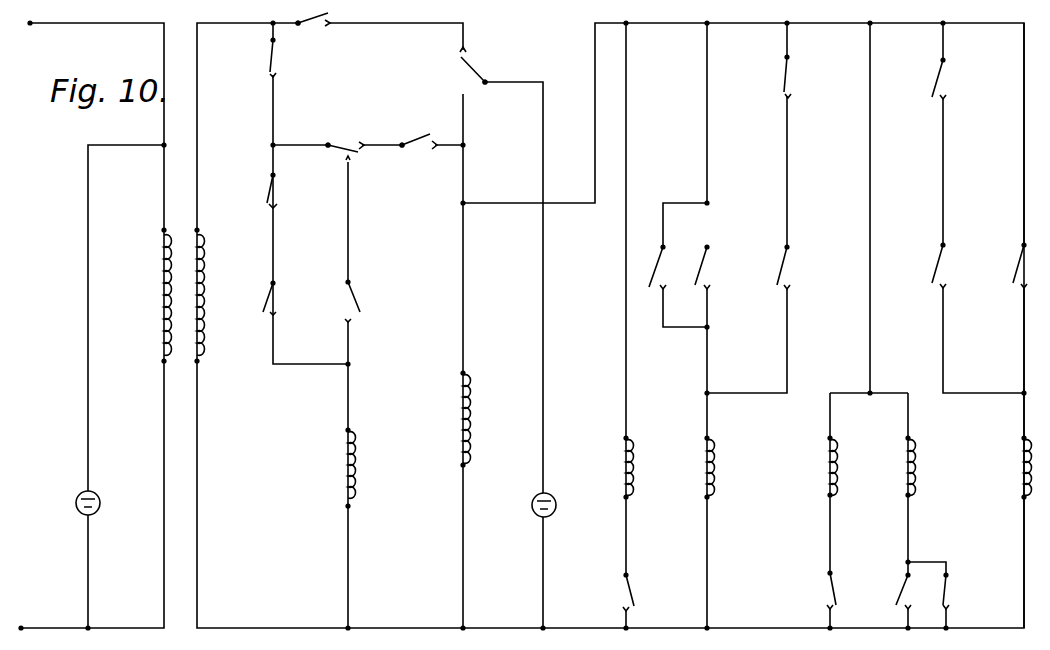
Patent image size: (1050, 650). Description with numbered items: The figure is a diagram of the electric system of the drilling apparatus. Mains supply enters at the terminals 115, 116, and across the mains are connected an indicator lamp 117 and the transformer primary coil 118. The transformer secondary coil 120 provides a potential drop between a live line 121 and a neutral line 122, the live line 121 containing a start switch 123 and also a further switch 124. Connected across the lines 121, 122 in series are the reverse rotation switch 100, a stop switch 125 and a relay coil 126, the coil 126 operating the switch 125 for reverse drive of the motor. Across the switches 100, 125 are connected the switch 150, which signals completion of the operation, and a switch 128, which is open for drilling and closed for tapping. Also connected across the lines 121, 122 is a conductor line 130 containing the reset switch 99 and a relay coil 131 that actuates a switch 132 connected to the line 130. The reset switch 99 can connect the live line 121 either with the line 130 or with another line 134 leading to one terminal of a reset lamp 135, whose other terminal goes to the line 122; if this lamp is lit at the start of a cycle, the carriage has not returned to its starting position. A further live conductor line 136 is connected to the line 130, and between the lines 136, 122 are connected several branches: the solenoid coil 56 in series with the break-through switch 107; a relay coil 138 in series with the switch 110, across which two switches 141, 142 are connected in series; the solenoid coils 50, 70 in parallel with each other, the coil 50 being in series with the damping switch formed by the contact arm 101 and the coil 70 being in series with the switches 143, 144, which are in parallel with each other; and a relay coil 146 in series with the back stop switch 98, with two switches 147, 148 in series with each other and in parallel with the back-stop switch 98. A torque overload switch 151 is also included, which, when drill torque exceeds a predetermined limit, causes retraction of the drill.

The terminal 115 is at (33, 27).
The terminal 116 is at (24, 625).
The indicator lamp 117 is at (76, 503).
The primary coil 118 is at (160, 293).
The transformer secondary coil 120 is at (204, 297).
The live line 121 is at (410, 24).
The neutral line 122 is at (395, 626).
The start switch 123 is at (316, 26).
The switch 124 is at (268, 65).
The reset switch 99 is at (478, 72).
The reverse rotation switch 100 is at (276, 192).
The switch 150 is at (339, 148).
The switch 132 is at (414, 139).
The conductor line 130 is at (466, 172).
The line 134 is at (543, 140).
The stop switch 125 is at (276, 298).
The switch 128 is at (359, 298).
The relay coil 126 is at (357, 467).
The relay coil 131 is at (470, 430).
The reset lamp 135 is at (531, 505).
The live conductor line 136 is at (838, 25).
The switch 141 is at (783, 80).
The switch 147 is at (948, 76).
The torque overload switch 151 is at (660, 258).
The switch 110 is at (705, 269).
The switch 142 is at (784, 269).
The switch 148 is at (940, 266).
The back stop switch 98 is at (1012, 281).
The solenoid coil 56 is at (622, 468).
The relay coil 138 is at (704, 468).
The solenoid coil 50 is at (826, 468).
The solenoid coil 70 is at (904, 468).
The relay coil 146 is at (1020, 468).
The break-through switch 107 is at (630, 592).
The contact arm 101 is at (826, 595).
The switch 143 is at (898, 593).
The switch 144 is at (950, 590).